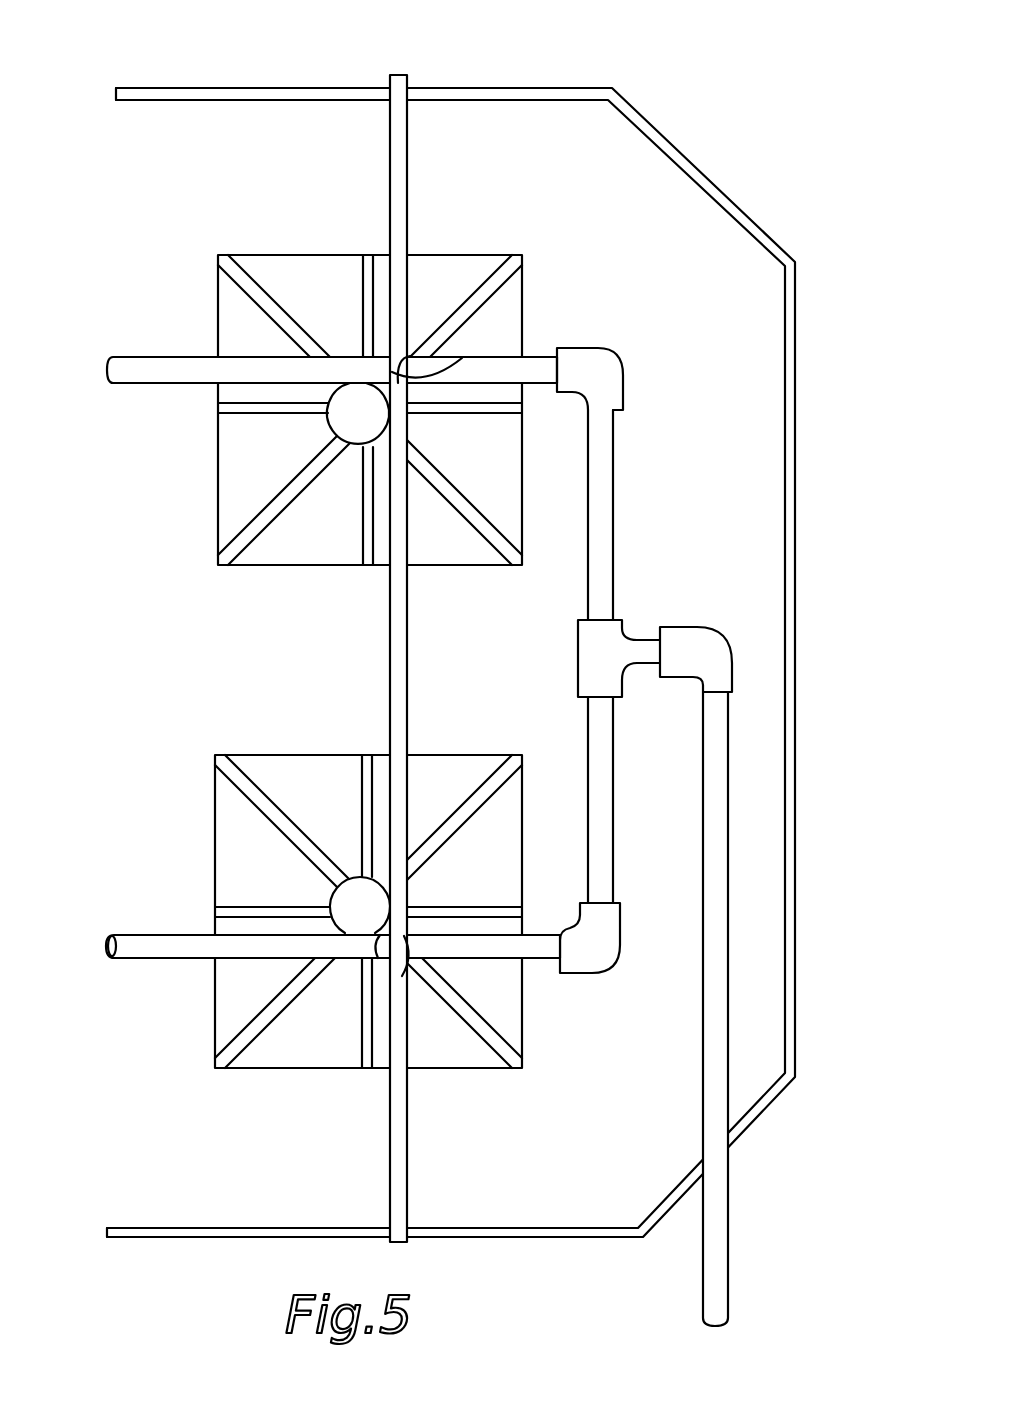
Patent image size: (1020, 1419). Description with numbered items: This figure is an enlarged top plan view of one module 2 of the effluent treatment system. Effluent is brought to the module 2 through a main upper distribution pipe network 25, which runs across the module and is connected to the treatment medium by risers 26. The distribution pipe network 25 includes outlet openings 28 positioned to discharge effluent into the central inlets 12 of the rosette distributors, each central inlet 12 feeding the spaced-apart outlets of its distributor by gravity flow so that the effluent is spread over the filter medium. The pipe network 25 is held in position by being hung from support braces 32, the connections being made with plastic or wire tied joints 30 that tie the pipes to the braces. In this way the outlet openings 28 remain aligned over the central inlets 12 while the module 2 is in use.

The module 2 is at (687, 186).
The central inlet 12 is at (340, 414).
The distribution pipe network 25 is at (138, 950).
The riser 26 is at (372, 388).
The outlet opening 28 is at (365, 950).
The tied joint 30 is at (400, 359).
The support brace 32 is at (412, 118).